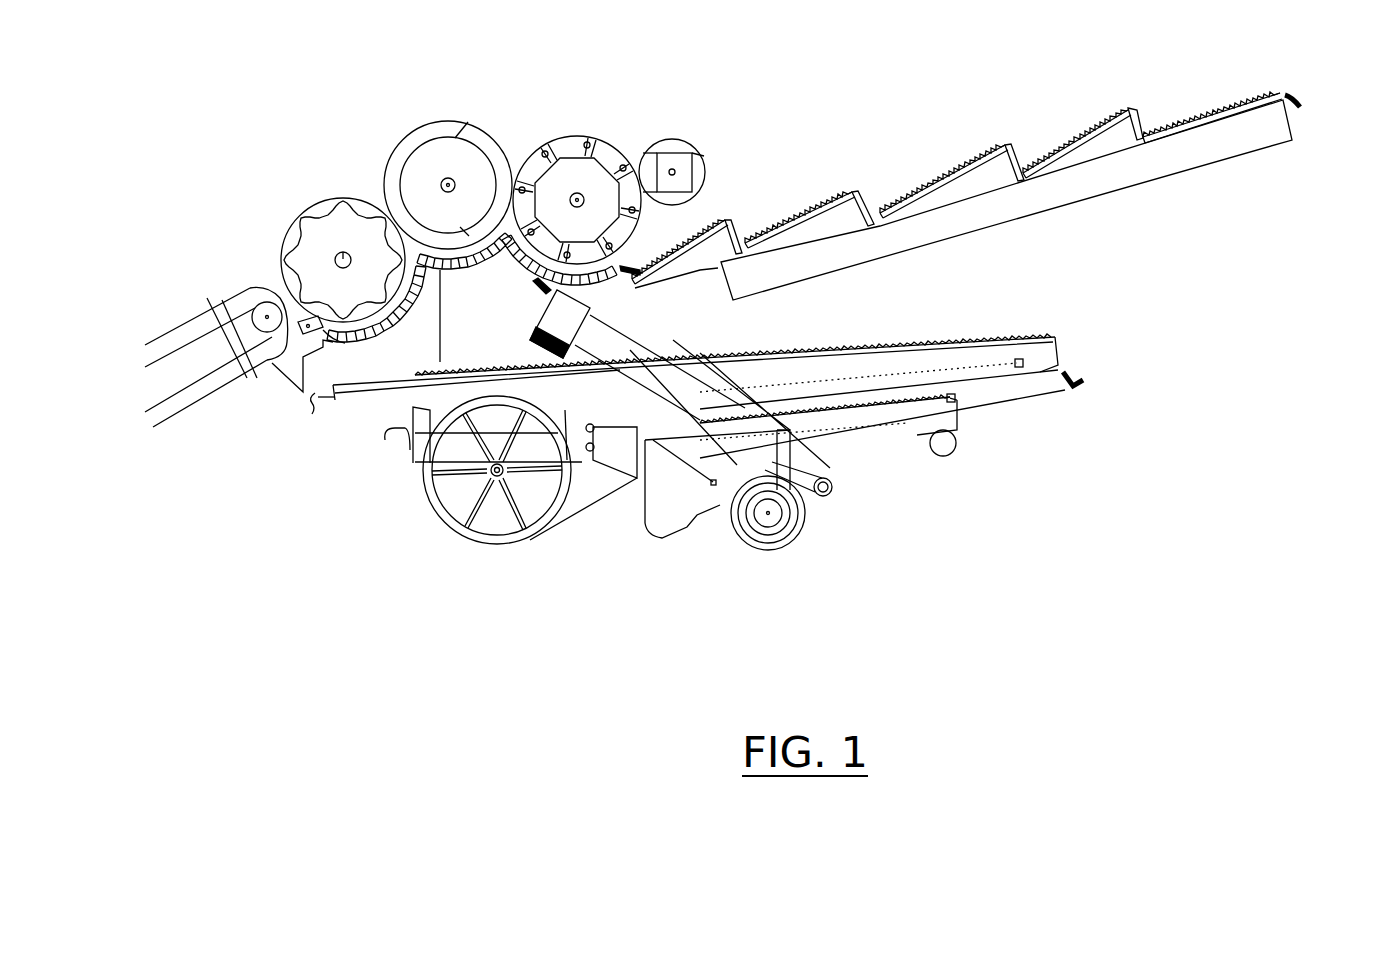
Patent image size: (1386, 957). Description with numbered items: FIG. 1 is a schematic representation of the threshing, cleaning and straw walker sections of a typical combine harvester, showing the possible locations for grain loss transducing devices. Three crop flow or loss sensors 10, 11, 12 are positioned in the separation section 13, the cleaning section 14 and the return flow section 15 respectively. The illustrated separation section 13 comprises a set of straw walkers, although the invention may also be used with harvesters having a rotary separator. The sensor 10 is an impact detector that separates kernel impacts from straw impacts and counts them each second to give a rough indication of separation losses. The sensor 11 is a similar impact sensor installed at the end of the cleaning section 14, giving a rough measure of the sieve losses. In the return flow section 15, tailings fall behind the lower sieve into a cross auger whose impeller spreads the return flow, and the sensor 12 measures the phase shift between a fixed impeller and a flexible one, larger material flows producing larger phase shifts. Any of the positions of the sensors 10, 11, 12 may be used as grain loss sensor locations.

The crop flow or loss sensor 10 is at (1287, 100).
The crop flow or loss sensor 11 is at (1085, 381).
The crop flow or loss sensor 12 is at (533, 332).
The separation section 13 is at (1057, 128).
The cleaning section 14 is at (975, 325).
The return flow section 15 is at (592, 320).